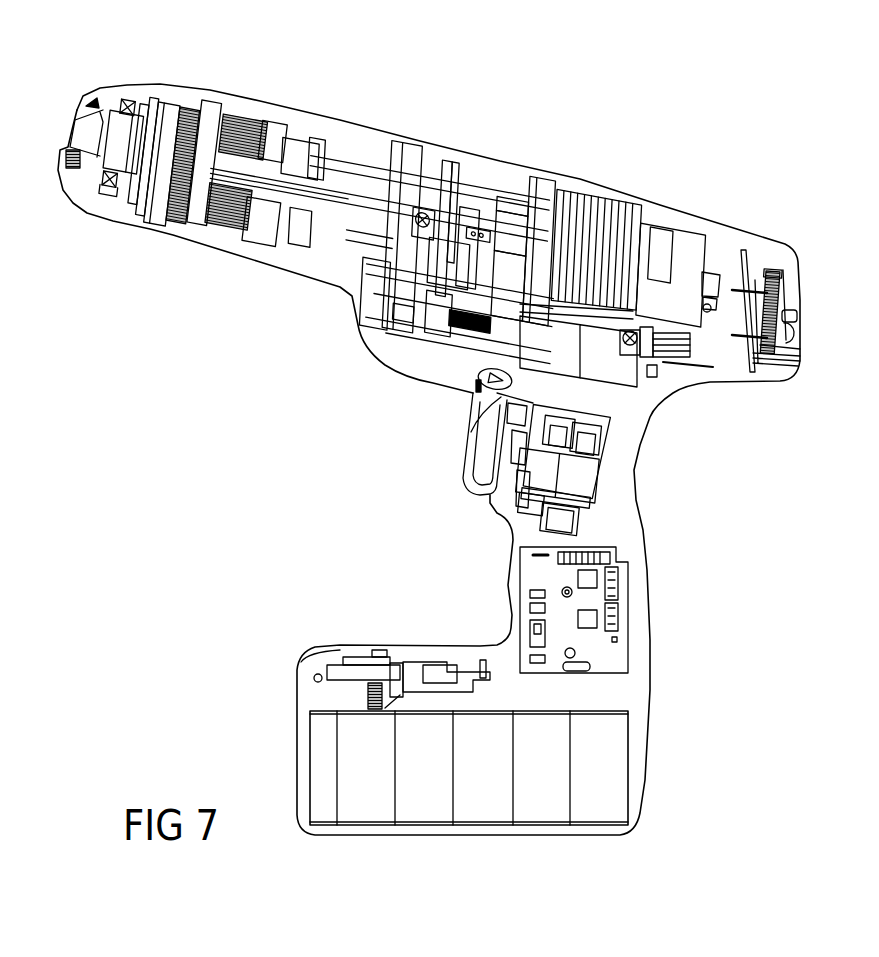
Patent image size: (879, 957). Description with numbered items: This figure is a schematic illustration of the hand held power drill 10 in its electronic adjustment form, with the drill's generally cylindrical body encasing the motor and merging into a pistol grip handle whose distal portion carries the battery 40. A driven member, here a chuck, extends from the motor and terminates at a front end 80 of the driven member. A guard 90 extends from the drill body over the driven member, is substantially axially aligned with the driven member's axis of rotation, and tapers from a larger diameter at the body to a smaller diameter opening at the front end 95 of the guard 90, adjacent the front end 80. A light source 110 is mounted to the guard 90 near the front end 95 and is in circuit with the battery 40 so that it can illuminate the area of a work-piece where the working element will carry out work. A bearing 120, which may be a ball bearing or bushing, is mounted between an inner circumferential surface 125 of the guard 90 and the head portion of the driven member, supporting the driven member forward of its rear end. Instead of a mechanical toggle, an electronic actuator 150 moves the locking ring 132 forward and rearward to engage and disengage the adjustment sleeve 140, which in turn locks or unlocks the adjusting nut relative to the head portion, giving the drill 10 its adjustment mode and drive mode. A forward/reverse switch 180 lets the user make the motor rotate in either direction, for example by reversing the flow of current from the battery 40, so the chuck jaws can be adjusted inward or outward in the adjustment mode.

The power drill 10 is at (684, 158).
The battery 40 is at (610, 778).
The front end of the driven member 80 is at (73, 128).
The guard 90 is at (212, 88).
The front end of the guard 95 is at (92, 203).
The light source 110 is at (92, 100).
The bearing 120 is at (114, 196).
The inner circumferential surface 125 is at (104, 190).
The locking ring 132 is at (198, 222).
The adjustment sleeve 140 is at (168, 110).
The electronic actuator 150 is at (553, 382).
The forward/reverse switch 180 is at (471, 432).